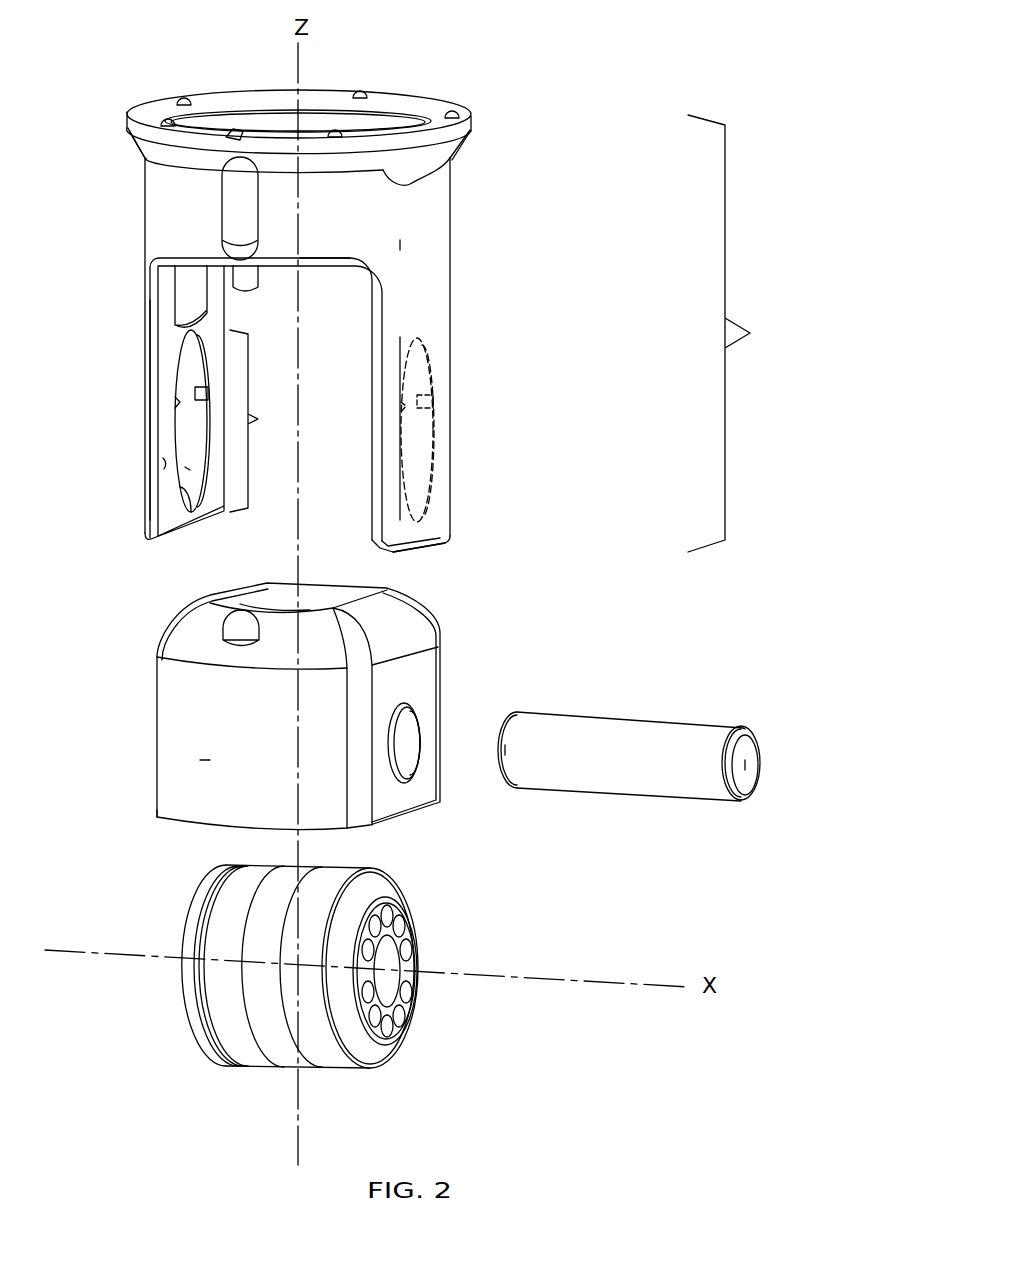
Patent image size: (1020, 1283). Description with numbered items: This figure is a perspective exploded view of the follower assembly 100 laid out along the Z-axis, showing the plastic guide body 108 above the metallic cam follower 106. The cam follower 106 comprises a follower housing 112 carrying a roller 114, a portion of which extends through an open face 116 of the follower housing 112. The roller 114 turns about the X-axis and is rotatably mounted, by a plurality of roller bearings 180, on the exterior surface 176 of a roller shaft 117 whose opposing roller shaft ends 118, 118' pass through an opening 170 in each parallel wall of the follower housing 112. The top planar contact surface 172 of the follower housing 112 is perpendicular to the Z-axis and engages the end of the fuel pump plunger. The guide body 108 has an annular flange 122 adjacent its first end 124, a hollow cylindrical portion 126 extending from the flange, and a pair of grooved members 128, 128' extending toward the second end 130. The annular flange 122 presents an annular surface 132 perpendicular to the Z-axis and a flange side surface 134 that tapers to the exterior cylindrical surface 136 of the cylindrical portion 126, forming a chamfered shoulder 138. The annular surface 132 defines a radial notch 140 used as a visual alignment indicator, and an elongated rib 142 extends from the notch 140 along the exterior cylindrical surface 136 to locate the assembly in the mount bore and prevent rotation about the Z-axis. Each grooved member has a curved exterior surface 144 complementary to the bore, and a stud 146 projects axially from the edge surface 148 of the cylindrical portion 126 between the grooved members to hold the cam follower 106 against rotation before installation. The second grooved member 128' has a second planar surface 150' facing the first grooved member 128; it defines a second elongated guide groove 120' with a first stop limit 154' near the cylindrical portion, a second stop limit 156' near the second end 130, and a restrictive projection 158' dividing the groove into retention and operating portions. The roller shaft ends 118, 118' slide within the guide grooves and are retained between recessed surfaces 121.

The follower assembly 100 is at (640, 88).
The cam follower 106 is at (182, 714).
The guide body 108 is at (145, 182).
The follower housing 112 is at (226, 782).
The roller 114 is at (255, 1025).
The open face 116 is at (207, 827).
The roller shaft 117 is at (716, 708).
The roller shaft end 118 is at (783, 807).
The roller shaft end 118' is at (467, 800).
The second elongated guide groove 120' is at (265, 421).
The recessed surface 121 is at (185, 467).
The annular flange 122 is at (397, 128).
The first end 124 is at (274, 123).
The hollow cylindrical portion 126 is at (746, 333).
The first grooved member 128 is at (516, 430).
The second grooved member 128' is at (86, 410).
The second end 130 is at (432, 538).
The annular surface 132 is at (152, 112).
The flange side surface 134 is at (155, 135).
The exterior cylindrical surface 136 is at (420, 247).
The chamfered shoulder 138 is at (452, 157).
The notch 140 is at (237, 133).
The elongated rib 142 is at (233, 223).
The exterior surface 144 is at (438, 357).
The stud 146 is at (240, 277).
The edge surface 148 is at (317, 270).
The second planar surface 150' is at (109, 481).
The first stop limit 154' is at (125, 413).
The second stop limit 156' is at (123, 518).
The restrictive projection 158' is at (120, 402).
The opening 170 is at (407, 730).
The top planar contact surface 172 is at (313, 595).
The exterior surface 176 is at (607, 719).
The roller bearings 180 is at (417, 938).